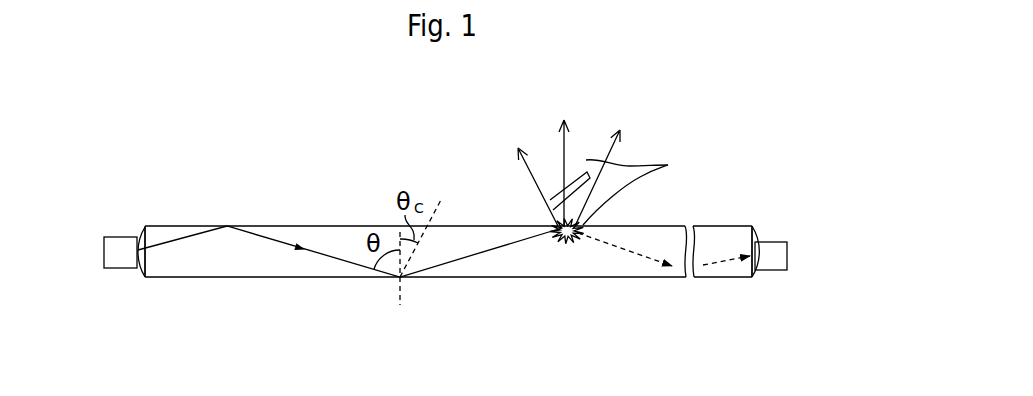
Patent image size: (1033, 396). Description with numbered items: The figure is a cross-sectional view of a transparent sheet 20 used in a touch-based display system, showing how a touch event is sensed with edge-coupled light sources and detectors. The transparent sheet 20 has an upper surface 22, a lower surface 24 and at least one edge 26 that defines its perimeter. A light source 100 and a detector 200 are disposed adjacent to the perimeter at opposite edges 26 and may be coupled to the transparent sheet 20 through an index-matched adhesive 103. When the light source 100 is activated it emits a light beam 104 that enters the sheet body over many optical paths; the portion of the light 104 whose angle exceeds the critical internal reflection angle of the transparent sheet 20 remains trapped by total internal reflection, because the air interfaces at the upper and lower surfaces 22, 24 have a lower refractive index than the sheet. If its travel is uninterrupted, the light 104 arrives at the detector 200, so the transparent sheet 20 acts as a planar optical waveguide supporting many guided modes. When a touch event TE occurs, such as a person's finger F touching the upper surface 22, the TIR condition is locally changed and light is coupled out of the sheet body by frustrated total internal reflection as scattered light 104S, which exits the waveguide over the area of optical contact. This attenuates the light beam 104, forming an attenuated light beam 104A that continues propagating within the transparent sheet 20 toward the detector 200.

The transparent sheet 20 is at (187, 133).
The upper surface 22 is at (262, 226).
The lower surface 24 is at (503, 277).
The edge 26 is at (135, 272).
The light source 100 is at (115, 248).
The index-matched adhesive 103 is at (134, 230).
The light beam 104 is at (177, 240).
The attenuated light beam 104A is at (634, 255).
The scattered light 104S is at (628, 140).
The detector 200 is at (785, 256).
The touch event TE is at (536, 215).
The finger F is at (619, 187).